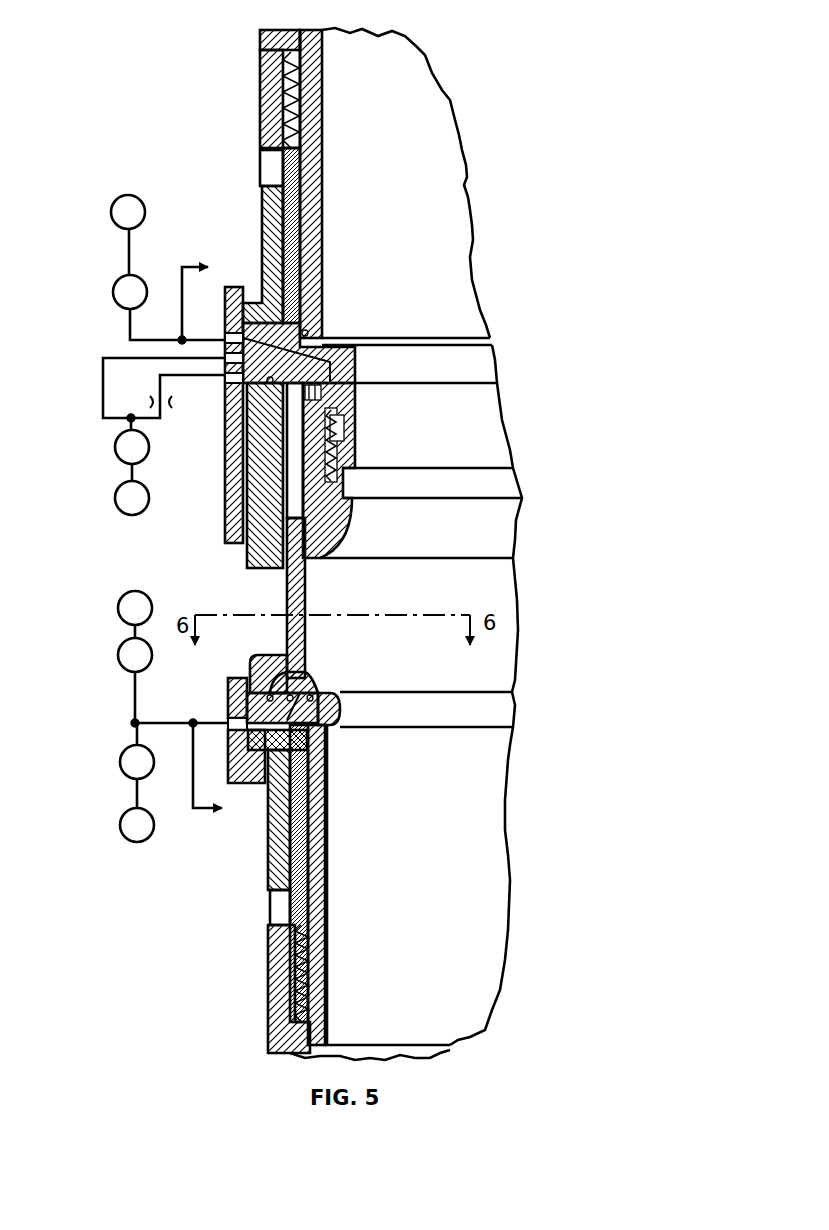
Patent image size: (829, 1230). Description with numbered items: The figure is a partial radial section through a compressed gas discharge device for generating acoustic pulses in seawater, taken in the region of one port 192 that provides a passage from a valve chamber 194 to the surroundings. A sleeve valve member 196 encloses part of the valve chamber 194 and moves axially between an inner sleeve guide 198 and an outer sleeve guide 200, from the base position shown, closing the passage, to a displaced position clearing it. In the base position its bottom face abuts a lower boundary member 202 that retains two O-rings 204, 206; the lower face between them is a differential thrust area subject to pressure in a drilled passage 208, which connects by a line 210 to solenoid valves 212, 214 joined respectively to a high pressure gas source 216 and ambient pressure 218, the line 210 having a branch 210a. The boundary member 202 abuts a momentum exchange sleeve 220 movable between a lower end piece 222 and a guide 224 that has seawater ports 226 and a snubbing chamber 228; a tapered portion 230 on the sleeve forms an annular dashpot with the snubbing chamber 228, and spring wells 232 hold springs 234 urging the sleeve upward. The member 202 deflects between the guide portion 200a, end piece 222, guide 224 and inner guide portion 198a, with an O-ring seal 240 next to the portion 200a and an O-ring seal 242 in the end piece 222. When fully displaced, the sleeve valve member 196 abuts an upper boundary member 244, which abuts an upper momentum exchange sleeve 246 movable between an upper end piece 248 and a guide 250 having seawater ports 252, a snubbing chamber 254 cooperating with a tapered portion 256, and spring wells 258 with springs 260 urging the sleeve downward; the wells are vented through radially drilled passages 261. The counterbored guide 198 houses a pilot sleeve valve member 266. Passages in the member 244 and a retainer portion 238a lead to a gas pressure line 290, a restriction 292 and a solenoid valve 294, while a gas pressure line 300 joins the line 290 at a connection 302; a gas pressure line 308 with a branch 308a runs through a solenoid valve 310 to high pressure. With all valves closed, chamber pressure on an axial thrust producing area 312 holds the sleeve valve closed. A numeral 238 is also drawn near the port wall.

The port 192 is at (255, 603).
The valve chamber 194 is at (474, 587).
The sleeve valve member 196 is at (305, 578).
The inner sleeve guide 198 is at (335, 520).
The inner sleeve guide portion 198a is at (318, 738).
The outer sleeve guide 200 is at (263, 495).
The guide portion 200a is at (253, 663).
The lower boundary member 202 is at (240, 682).
The O-ring 204 is at (310, 683).
The O-ring 206 is at (340, 700).
The drilled passage 208 is at (312, 748).
The line 210 is at (140, 726).
The branch 210a is at (222, 808).
The solenoid valve 212 is at (118, 660).
The solenoid valve 214 is at (120, 760).
The source of high pressure compressed gas 216 is at (128, 195).
The ambient pressure 218 is at (116, 500).
The momentum exchange sleeve 220 is at (298, 828).
The lower end piece 222 is at (320, 857).
The momentum exchange sleeve guide 224 is at (278, 852).
The seawater ports 226 is at (275, 905).
The snubbing chamber 228 is at (290, 968).
The tapered portion 230 is at (295, 905).
The spring wells 232 is at (310, 1000).
The springs 234 is at (290, 990).
The port 238 is at (242, 705).
The retainer portion 238a is at (232, 533).
The O-ring seal 240 is at (300, 677).
The O-ring seal 242 is at (320, 765).
The upper boundary member 244 is at (355, 362).
The upper momentum exchange sleeve 246 is at (293, 290).
The upper end piece 248 is at (312, 240).
The upper momentum exchange sleeve guide 250 is at (272, 212).
The seawater ports 252 is at (265, 165).
The snubbing chamber 254 is at (287, 108).
The tapered portion 256 is at (300, 180).
The spring wells 258 is at (280, 74).
The springs 260 is at (313, 117).
The radially drilled passages 261 is at (284, 48).
The pilot sleeve valve member 266 is at (348, 422).
The gas pressure line 290 is at (200, 382).
The restriction 292 is at (170, 398).
The solenoid valve 294 is at (117, 455).
The gas pressure line 300 is at (100, 382).
The connection 302 is at (128, 422).
The gas pressure line 308 is at (128, 326).
The branch 308a is at (190, 285).
The solenoid valve 310 is at (113, 282).
The axial thrust producing area 312 is at (320, 693).